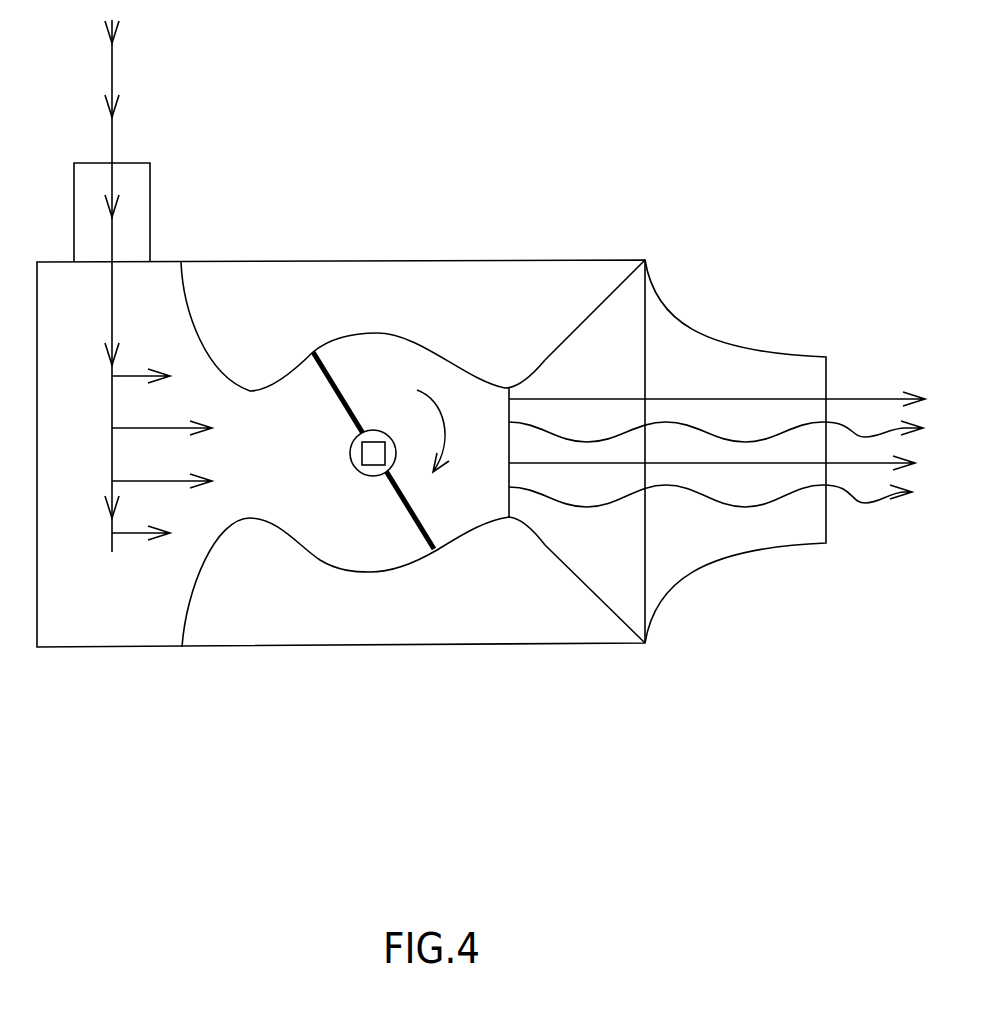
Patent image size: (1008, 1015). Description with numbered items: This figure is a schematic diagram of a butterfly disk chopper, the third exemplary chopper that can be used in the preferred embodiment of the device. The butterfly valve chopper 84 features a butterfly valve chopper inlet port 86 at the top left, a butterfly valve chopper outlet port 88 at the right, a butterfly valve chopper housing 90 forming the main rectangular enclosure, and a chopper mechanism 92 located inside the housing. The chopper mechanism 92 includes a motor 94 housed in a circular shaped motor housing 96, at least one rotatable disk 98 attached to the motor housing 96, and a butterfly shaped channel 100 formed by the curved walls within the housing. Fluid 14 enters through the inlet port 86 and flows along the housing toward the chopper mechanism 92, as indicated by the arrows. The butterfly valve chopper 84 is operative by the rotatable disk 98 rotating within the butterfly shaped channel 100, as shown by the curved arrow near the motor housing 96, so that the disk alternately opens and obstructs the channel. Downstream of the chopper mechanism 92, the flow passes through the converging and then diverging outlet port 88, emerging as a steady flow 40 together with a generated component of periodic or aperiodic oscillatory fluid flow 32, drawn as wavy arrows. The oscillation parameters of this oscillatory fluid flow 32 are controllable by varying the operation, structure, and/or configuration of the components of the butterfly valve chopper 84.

The intake air flow 14 is at (158, 286).
The component of periodic or aperiodic oscillatory fluid flow 32 is at (716, 459).
The straight air flow 40 is at (717, 421).
The butterfly valve chopper 84 is at (600, 525).
The butterfly valve chopper inlet port 86 is at (139, 212).
The butterfly valve chopper outlet port 88 is at (675, 542).
The butterfly valve chopper housing 90 is at (277, 648).
The chopper mechanism 92 is at (413, 452).
The motor 94 is at (373, 453).
The motor housing 96 is at (372, 427).
The rotatable disk 98 is at (330, 392).
The butterfly shaped channel 100 is at (428, 342).